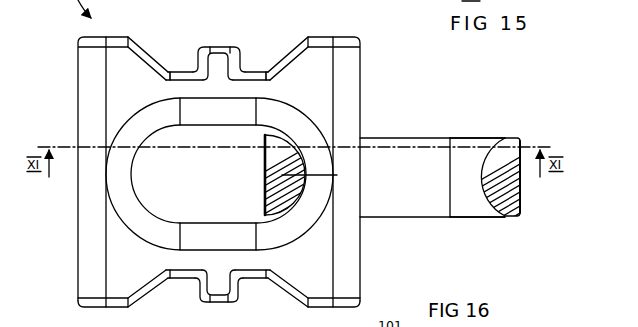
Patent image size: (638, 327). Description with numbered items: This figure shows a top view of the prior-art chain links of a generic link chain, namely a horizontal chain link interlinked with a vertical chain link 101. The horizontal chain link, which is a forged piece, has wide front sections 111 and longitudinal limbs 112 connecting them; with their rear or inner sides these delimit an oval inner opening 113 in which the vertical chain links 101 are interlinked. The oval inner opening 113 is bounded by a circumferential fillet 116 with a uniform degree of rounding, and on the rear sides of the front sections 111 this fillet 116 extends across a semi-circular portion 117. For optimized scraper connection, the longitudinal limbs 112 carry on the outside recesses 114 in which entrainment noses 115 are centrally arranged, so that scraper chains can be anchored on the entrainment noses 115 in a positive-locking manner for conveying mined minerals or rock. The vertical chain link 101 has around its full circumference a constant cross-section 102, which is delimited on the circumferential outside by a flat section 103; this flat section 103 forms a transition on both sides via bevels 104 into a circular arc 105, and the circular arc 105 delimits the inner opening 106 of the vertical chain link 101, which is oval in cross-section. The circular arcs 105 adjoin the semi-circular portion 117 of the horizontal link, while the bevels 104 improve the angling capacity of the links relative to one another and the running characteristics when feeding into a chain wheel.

The vertical chain link 101 is at (398, 176).
The cross-section 102 is at (513, 178).
The flat section 103 is at (266, 172).
The bevel 104 is at (272, 138).
The circular arc 105 is at (482, 177).
The inner opening 106 is at (404, 196).
The front section 111 is at (224, 160).
The longitudinal limb 112 is at (243, 90).
The oval inner opening 113 is at (219, 174).
The recess 114 is at (180, 57).
The entrainment nose 115 is at (218, 67).
The circumferential fillet 116 is at (210, 112).
The semi-circular portion 117 is at (131, 173).